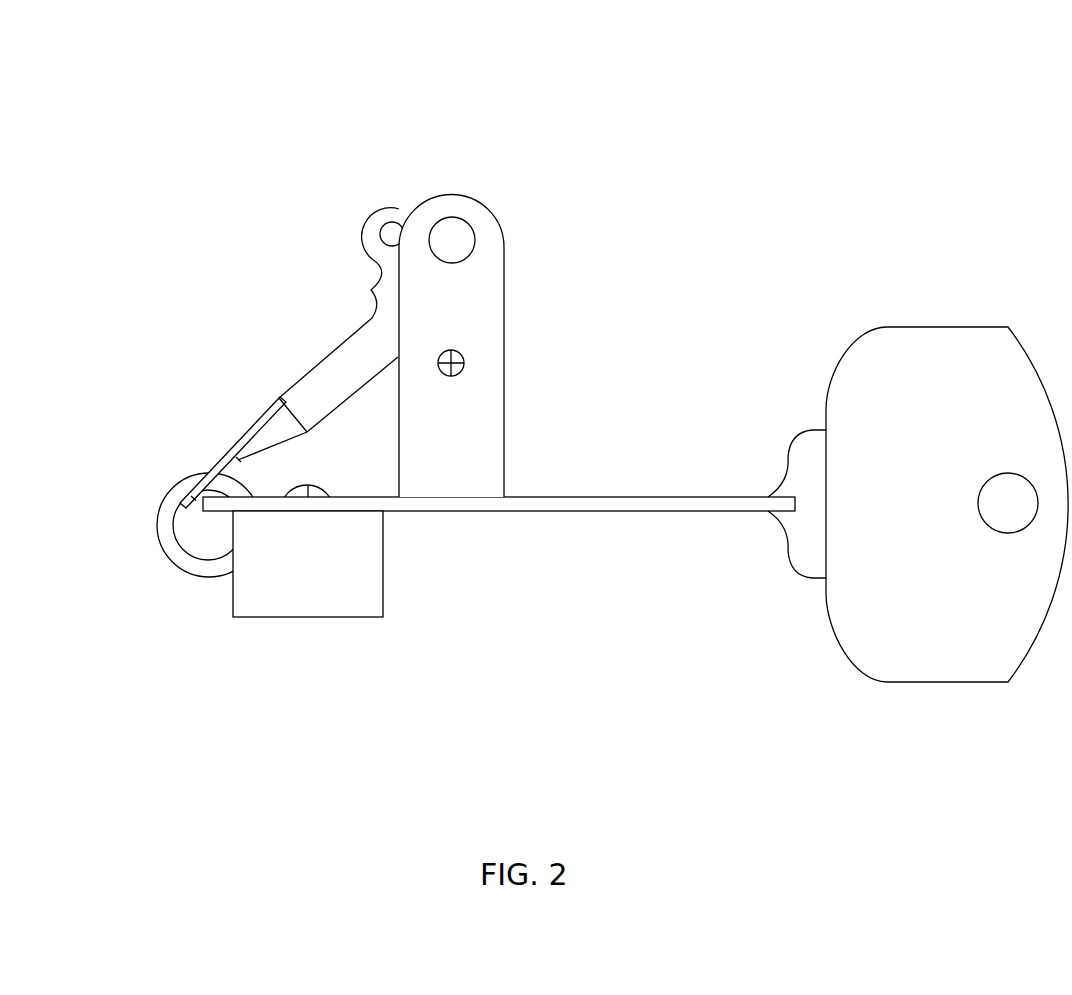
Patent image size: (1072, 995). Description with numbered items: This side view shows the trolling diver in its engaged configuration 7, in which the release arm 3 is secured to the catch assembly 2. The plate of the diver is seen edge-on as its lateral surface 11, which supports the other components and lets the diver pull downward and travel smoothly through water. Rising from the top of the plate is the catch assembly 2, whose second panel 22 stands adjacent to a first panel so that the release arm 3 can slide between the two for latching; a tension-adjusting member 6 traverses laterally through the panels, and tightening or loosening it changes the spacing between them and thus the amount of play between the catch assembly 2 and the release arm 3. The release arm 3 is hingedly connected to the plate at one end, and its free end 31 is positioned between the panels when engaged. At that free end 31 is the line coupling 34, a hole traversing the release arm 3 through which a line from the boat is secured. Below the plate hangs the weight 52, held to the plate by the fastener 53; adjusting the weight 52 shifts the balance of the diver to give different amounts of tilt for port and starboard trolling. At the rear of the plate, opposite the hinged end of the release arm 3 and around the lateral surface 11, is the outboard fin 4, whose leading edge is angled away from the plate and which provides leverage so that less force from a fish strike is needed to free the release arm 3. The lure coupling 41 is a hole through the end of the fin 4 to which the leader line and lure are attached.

The engaged configuration 7 is at (287, 123).
The catch assembly 2 is at (453, 190).
The second panel 22 is at (496, 353).
The tension-adjusting member 6 is at (455, 376).
The line coupling 34 is at (384, 236).
The free end 31 is at (373, 258).
The release arm 3 is at (248, 424).
The fastener 53 is at (313, 490).
The lateral surface 11 is at (543, 503).
The weight 52 is at (318, 607).
The fin 4 is at (968, 336).
The lure coupling 41 is at (1010, 473).